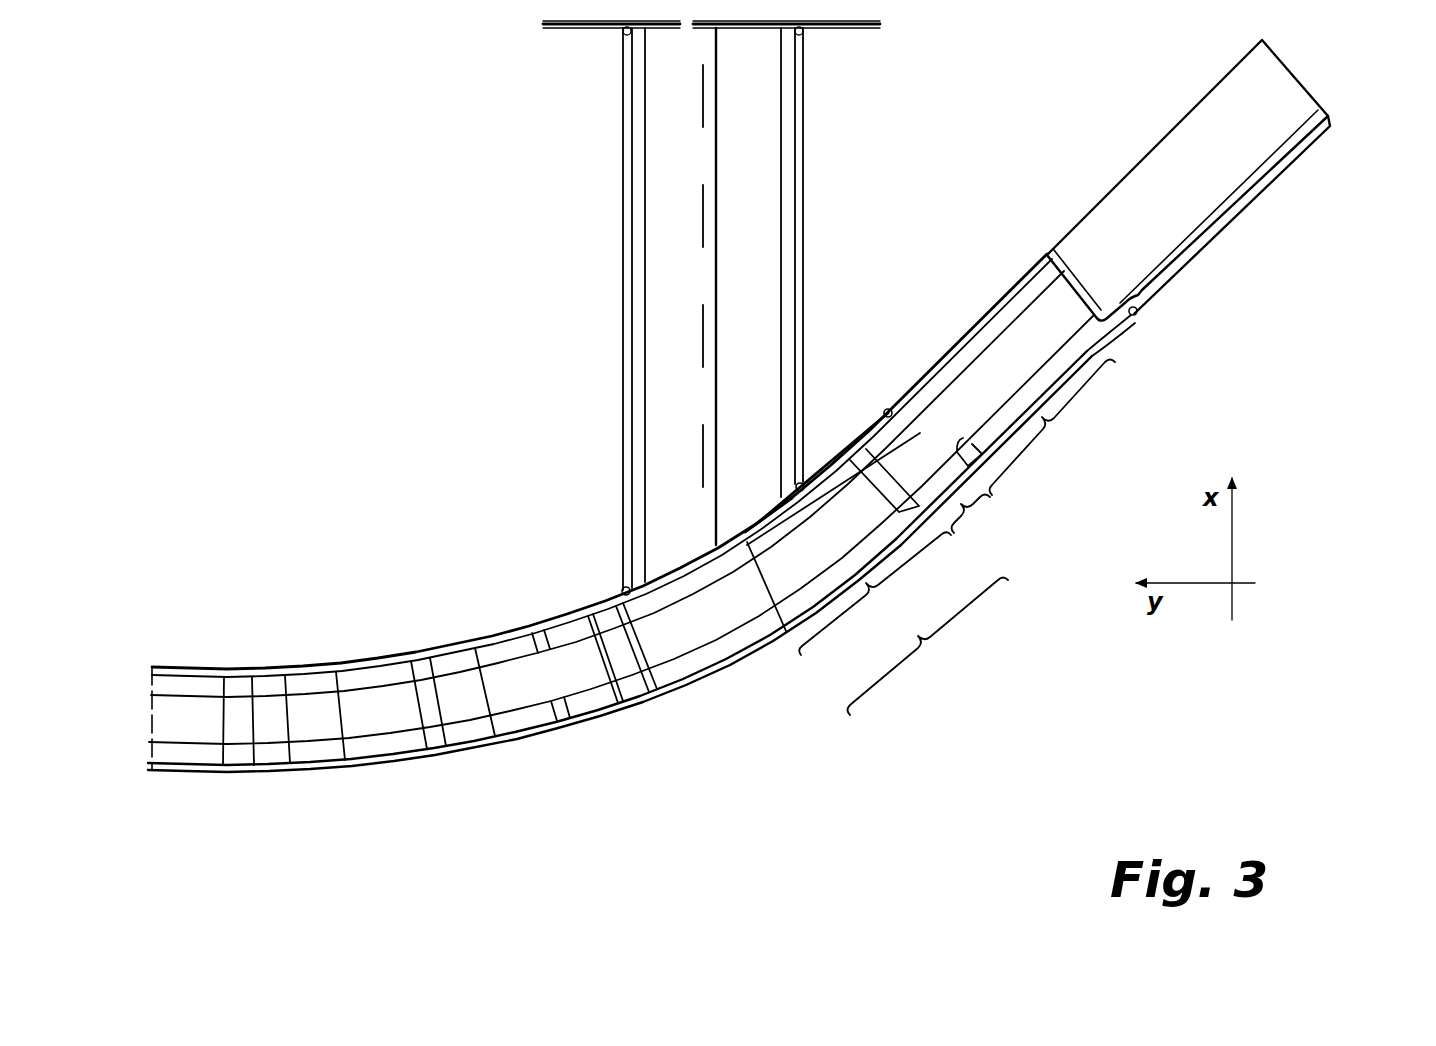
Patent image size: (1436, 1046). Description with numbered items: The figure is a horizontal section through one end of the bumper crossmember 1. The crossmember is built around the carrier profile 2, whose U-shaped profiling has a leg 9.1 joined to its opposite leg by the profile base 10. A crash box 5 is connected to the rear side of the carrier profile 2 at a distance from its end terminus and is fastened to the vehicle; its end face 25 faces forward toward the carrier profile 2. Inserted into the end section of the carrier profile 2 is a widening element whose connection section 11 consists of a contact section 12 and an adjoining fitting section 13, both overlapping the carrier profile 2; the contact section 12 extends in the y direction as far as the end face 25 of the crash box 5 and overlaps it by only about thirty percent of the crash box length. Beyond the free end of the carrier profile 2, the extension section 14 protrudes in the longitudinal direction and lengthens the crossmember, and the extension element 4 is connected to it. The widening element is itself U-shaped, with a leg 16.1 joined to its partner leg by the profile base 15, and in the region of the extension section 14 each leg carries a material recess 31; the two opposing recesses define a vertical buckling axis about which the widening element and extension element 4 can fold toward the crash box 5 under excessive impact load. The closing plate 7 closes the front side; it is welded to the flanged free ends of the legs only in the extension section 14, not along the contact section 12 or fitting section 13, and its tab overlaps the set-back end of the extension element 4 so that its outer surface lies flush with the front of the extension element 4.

The bumper crossmember 1 is at (372, 367).
The carrier profile 2 is at (336, 650).
The extension element 4 is at (1200, 266).
The crash box 5 is at (620, 252).
The closing plate 7 is at (580, 736).
The leg 9.1 is at (701, 617).
The profile base 10 is at (848, 444).
The connection section 11 is at (928, 647).
The contact section 12 is at (875, 593).
The fitting section 13 is at (975, 533).
The extension section 14 is at (1053, 428).
The profile base 15 is at (768, 516).
The leg 16.1 is at (942, 422).
The end face 25 is at (943, 544).
The material recess 31 is at (966, 437).